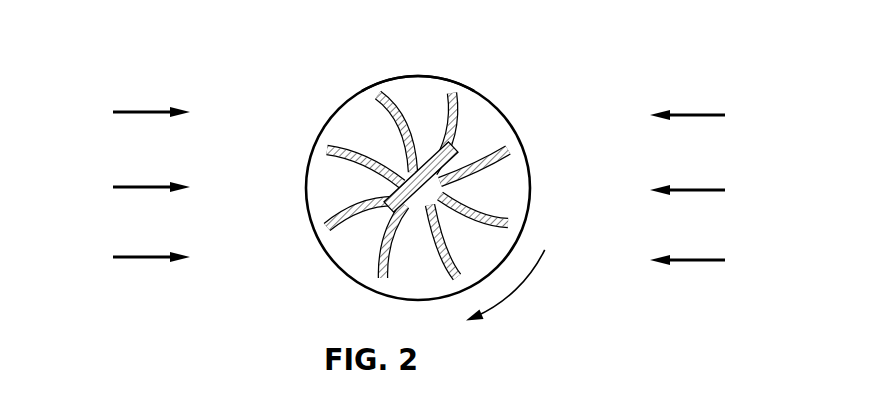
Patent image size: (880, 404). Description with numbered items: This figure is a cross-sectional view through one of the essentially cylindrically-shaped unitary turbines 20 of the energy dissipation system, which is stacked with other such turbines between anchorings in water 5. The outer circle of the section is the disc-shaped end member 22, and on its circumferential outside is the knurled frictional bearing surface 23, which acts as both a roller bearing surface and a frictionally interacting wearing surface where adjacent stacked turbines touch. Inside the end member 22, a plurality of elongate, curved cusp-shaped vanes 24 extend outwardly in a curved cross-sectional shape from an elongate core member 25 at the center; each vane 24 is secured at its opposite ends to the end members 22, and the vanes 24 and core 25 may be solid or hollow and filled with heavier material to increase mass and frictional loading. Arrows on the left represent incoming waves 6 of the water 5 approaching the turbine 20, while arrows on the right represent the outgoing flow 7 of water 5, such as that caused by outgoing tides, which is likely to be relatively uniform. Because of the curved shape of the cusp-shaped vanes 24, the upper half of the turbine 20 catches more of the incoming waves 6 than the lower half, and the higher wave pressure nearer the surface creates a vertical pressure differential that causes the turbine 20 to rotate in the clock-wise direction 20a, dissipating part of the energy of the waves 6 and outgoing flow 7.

The water 5 is at (60, 198).
The incoming waves 6 is at (127, 112).
The outgoing flow 7 is at (712, 113).
The unitary turbine 20 is at (423, 156).
The clock-wise direction 20a is at (525, 292).
The disc-shaped end member 22 is at (312, 182).
The knurled frictional bearing surface 23 is at (407, 76).
The cusp-shaped vane 24 is at (379, 110).
The core member 25 is at (407, 200).